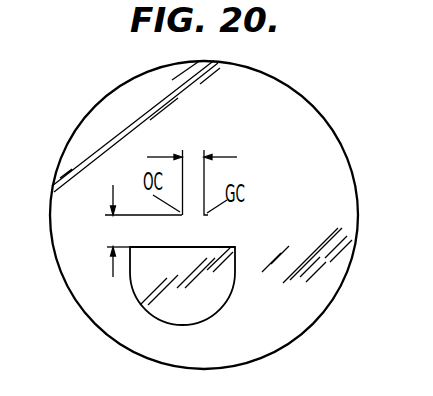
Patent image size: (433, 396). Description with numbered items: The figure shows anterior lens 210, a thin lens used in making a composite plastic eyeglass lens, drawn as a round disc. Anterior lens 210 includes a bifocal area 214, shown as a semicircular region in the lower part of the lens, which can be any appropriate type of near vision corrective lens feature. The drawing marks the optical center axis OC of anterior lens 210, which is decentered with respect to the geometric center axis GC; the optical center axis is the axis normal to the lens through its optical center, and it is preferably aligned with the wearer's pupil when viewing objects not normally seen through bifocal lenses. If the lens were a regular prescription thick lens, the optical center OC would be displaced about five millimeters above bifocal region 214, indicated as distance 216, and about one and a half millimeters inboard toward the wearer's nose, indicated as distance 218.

The anterior lens 210 is at (318, 110).
The bifocal area 214 is at (232, 288).
The distance 216 is at (113, 232).
The distance 218 is at (194, 155).